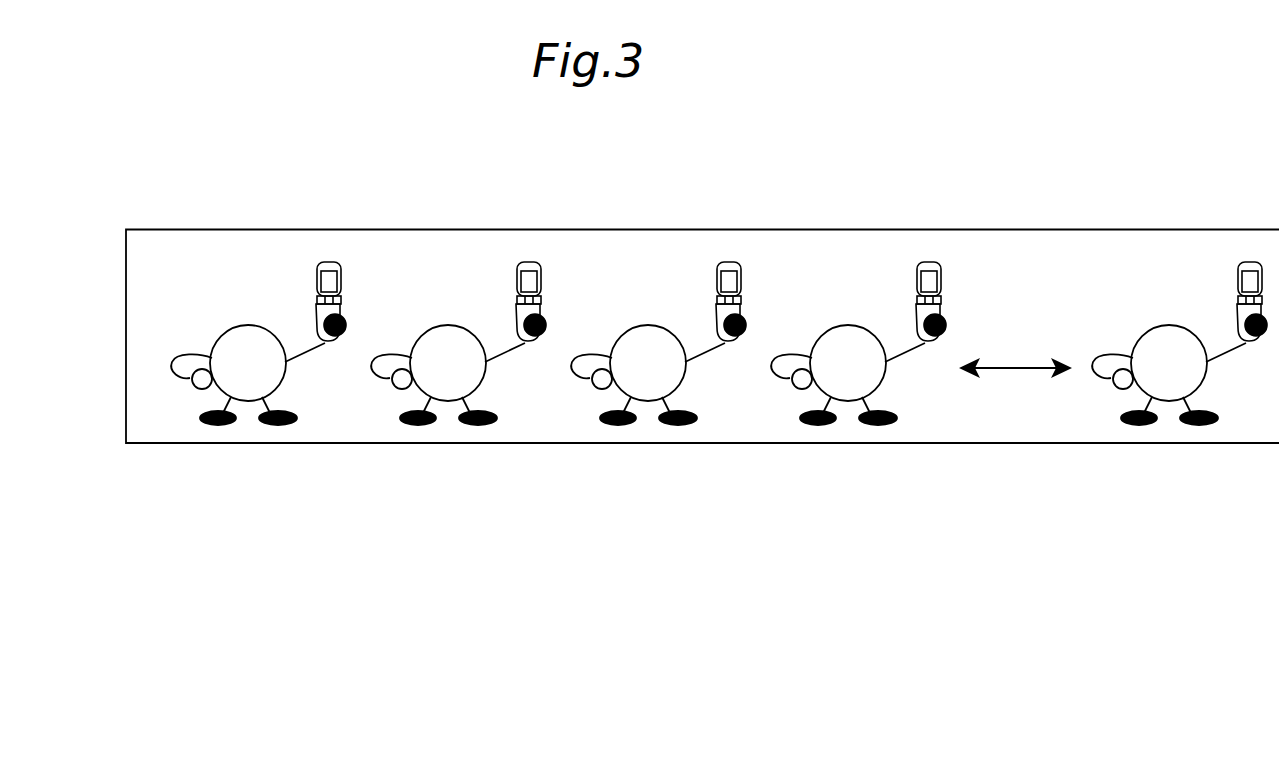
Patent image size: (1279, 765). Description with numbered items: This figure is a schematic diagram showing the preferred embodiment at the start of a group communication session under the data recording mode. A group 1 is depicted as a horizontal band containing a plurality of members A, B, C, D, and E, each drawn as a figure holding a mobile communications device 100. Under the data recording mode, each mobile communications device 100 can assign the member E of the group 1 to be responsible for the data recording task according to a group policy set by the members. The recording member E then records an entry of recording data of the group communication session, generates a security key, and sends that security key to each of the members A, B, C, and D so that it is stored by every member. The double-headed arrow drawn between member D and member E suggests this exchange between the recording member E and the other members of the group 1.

The group 1 is at (160, 306).
The mobile communications device 100 is at (769, 254).
The member A is at (248, 375).
The member B is at (448, 375).
The member C is at (648, 375).
The member D is at (848, 375).
The recording member E is at (1169, 375).